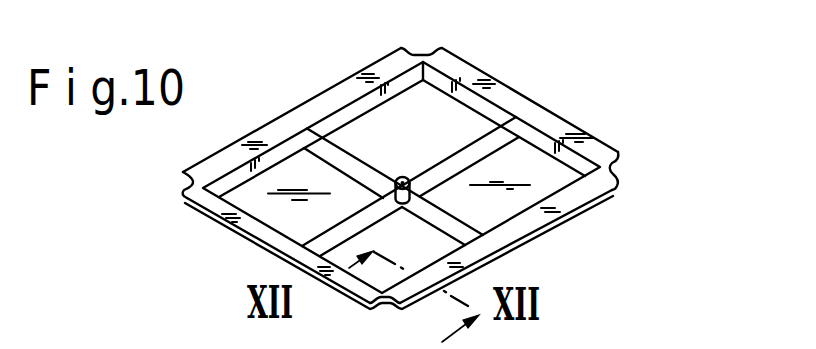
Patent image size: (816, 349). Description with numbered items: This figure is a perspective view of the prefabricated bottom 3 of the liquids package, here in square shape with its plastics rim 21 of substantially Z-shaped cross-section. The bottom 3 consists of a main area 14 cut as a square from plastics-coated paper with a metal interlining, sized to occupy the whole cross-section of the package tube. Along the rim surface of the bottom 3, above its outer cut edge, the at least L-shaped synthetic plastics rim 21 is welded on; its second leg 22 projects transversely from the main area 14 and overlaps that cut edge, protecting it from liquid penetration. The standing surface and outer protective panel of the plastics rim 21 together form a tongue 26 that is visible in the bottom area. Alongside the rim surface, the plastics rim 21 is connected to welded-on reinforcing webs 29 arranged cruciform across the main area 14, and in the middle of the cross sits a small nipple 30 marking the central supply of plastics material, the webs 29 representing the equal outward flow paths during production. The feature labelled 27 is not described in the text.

The bottom 3 is at (543, 97).
The main area 14 is at (317, 197).
The plastics rim 21 is at (252, 233).
The second leg 22 is at (447, 80).
The tongue 26 is at (576, 199).
The edge portion 27 is at (214, 8).
The reinforcing webs 29 is at (481, 150).
The nipple 30 is at (407, 176).